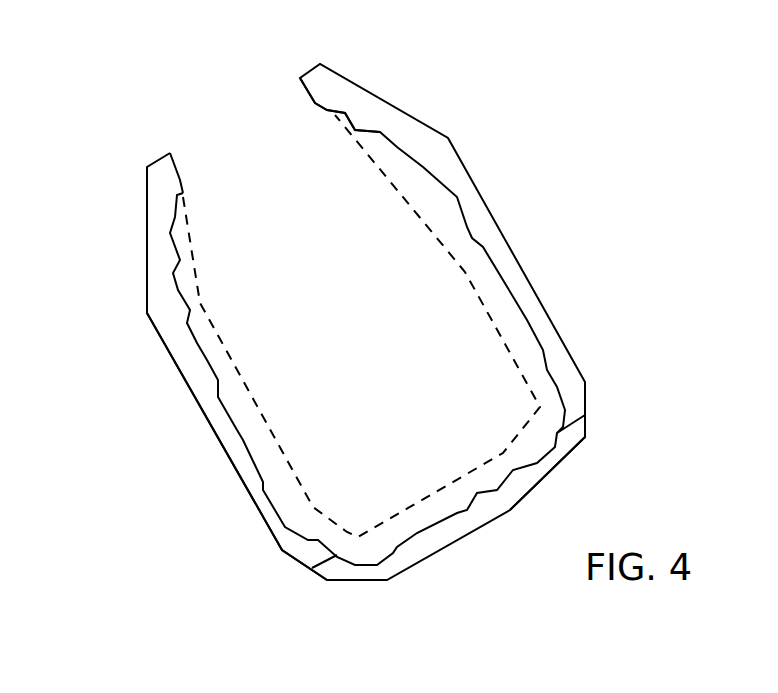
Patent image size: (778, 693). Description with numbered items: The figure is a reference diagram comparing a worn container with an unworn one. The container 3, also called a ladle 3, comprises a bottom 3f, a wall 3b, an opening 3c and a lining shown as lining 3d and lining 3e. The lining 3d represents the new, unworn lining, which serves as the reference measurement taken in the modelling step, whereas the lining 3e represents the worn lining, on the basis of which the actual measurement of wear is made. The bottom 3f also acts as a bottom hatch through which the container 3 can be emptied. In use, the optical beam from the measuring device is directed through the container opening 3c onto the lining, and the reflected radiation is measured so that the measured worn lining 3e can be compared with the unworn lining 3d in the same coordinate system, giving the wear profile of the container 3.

The container 3 is at (352, 295).
The wall 3b is at (227, 452).
The opening 3c is at (247, 128).
The lining 3d is at (480, 292).
The lining 3e is at (557, 388).
The bottom 3f is at (573, 442).